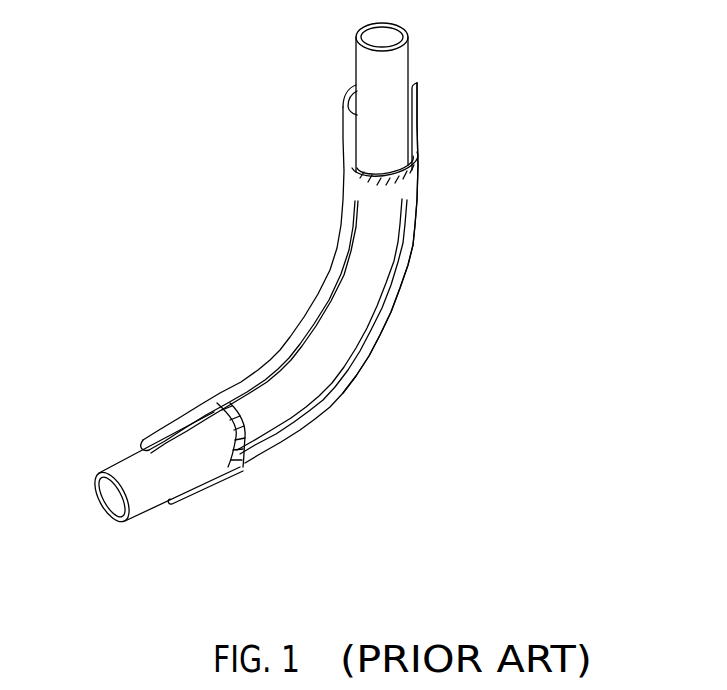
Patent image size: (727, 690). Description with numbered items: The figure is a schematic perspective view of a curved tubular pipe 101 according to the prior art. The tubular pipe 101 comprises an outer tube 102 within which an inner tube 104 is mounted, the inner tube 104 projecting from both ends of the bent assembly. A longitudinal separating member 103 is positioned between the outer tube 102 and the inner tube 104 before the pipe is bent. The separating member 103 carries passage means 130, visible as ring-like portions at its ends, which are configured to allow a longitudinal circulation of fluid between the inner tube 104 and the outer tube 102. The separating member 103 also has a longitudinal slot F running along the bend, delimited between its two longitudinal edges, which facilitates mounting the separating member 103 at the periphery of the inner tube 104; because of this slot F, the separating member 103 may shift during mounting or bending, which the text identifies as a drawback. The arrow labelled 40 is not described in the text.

The tubular pipe 101 is at (226, 229).
The inner tube 40 is at (340, 325).
The longitudinal slot F is at (370, 344).
The outer tube 102 is at (177, 417).
The longitudinal separating member 103 is at (313, 378).
The passage means 130 is at (232, 404).
The inner tube 104 is at (103, 468).